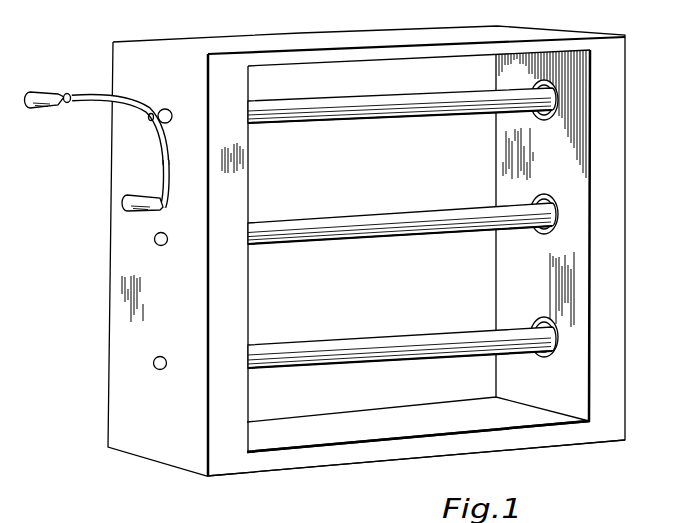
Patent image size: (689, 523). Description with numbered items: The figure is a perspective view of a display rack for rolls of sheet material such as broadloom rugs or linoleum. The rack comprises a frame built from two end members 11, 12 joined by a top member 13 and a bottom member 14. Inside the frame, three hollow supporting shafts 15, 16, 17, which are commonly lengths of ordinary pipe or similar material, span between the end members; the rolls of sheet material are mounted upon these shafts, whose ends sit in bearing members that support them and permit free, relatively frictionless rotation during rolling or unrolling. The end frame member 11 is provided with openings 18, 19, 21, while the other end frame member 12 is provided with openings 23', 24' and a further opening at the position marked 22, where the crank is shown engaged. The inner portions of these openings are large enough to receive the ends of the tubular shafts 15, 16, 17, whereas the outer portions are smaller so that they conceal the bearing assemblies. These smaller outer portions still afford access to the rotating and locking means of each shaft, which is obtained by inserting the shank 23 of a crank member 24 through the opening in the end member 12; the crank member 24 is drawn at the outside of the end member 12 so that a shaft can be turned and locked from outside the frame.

The end frame member 11 is at (620, 313).
The end frame member 12 is at (240, 300).
The top member 13 is at (353, 60).
The bottom member 14 is at (360, 457).
The hollow supporting shaft 15 is at (407, 97).
The hollow supporting shaft 16 is at (388, 212).
The hollow supporting shaft 17 is at (370, 340).
The opening 18 is at (548, 118).
The opening 19 is at (549, 230).
The opening 21 is at (551, 350).
The shaft bracket 22 is at (167, 110).
The shank 23 is at (112, 128).
The crank member 24 is at (159, 178).
The opening 23' is at (179, 233).
The opening 24' is at (175, 352).